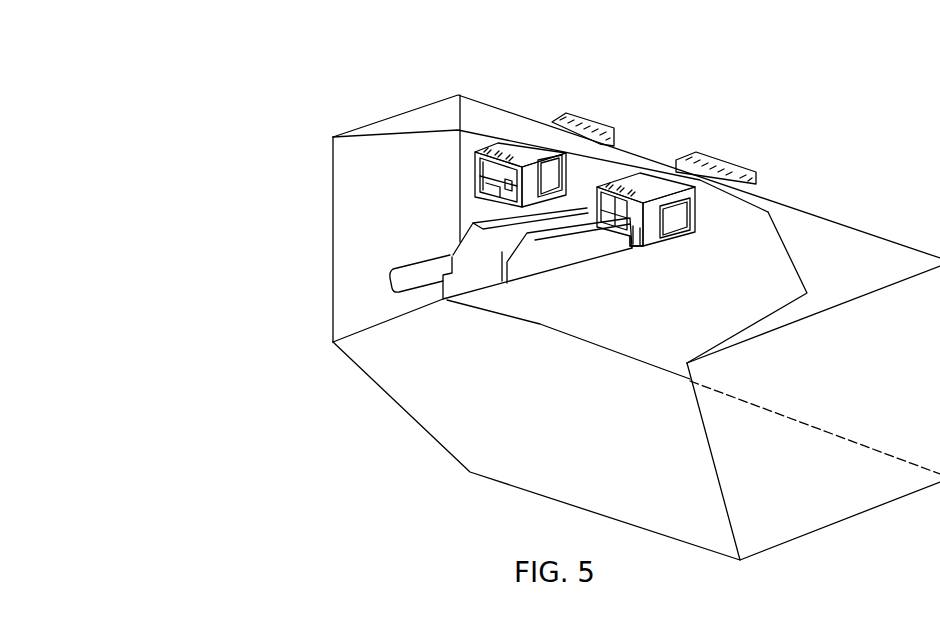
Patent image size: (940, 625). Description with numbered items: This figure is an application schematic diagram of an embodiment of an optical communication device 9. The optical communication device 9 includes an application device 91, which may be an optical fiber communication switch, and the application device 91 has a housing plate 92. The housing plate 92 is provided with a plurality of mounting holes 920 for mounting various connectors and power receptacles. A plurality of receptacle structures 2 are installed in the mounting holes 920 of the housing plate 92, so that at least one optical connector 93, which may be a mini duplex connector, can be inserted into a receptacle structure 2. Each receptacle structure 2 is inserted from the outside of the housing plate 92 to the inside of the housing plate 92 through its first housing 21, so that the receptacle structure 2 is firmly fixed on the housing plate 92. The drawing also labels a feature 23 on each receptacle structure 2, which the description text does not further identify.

The optical communication device 9 is at (405, 72).
The application device 91 is at (391, 118).
The housing plate 92 is at (757, 296).
The optical connector 93 is at (583, 263).
The receptacle structure 2 is at (548, 103).
The first housing 21 is at (651, 248).
The connector mounting strip 23 is at (588, 121).
The mounting holes 920 is at (697, 233).